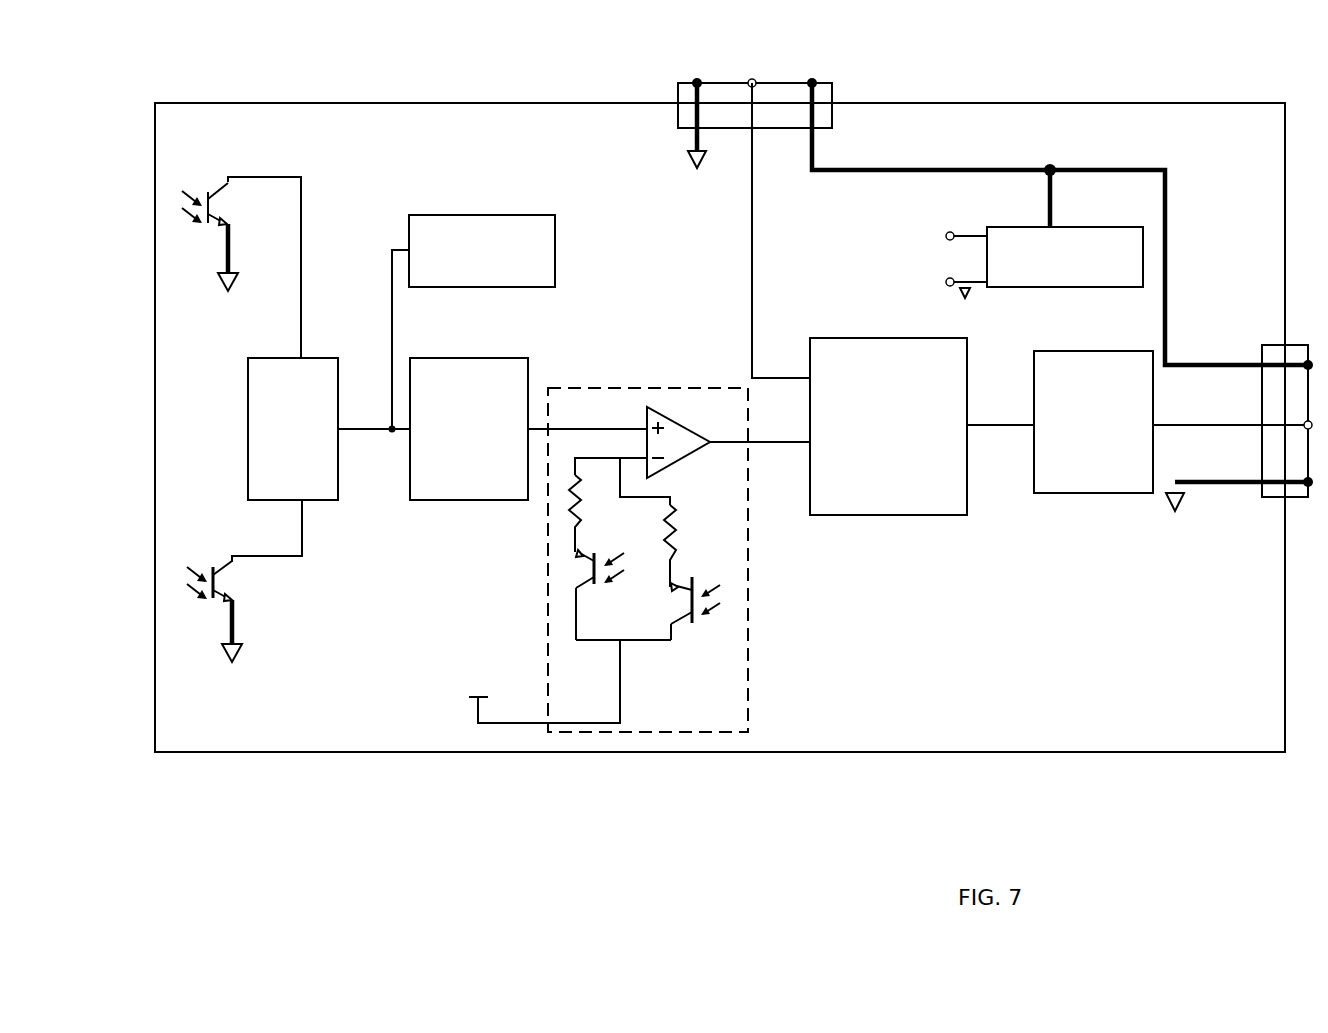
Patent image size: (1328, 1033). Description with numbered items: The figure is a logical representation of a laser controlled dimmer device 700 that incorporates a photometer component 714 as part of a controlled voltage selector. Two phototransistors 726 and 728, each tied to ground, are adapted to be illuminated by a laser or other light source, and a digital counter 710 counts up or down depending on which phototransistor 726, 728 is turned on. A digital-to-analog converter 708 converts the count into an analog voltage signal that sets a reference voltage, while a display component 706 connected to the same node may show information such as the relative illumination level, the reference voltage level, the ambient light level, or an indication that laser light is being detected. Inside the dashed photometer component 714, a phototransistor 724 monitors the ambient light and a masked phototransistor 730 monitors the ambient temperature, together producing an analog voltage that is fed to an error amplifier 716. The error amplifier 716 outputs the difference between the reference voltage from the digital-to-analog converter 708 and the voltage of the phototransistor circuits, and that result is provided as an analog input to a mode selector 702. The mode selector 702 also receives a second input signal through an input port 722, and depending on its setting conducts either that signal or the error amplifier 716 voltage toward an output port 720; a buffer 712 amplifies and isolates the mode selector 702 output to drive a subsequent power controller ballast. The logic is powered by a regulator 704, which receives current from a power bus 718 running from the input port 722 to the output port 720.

The laser controlled dimmer device 700 is at (697, 797).
The mode selector 702 is at (888, 426).
The regulator 704 is at (972, 262).
The display component 706 is at (482, 251).
The digital-to-analog converter 708 is at (469, 429).
The digital counter 710 is at (293, 429).
The buffer 712 is at (1093, 422).
The photometer component 714 is at (626, 512).
The error amplifier 716 is at (660, 400).
The power bus 718 is at (1150, 167).
The output port 720 is at (1273, 498).
The input port 722 is at (832, 123).
The phototransistor 724 is at (562, 577).
The phototransistor 726 is at (240, 600).
The phototransistor 728 is at (233, 210).
The phototransistor 730 is at (714, 634).